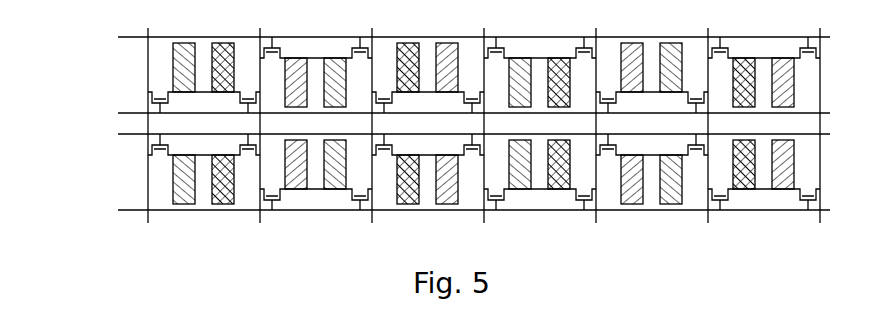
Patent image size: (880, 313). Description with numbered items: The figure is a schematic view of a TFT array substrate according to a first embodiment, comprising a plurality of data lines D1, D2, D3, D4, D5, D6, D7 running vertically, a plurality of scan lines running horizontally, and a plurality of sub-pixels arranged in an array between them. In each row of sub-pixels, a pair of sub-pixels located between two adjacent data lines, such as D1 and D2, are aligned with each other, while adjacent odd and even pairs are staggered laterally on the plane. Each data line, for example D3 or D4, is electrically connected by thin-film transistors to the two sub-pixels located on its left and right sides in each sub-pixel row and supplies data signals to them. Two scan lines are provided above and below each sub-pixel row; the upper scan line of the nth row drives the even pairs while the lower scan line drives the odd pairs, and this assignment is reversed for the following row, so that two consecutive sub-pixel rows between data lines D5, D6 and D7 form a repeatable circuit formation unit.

The data line D1 is at (149, 115).
The data line D2 is at (262, 115).
The data line D3 is at (375, 115).
The data line D4 is at (487, 115).
The data line D5 is at (593, 114).
The data line D6 is at (704, 114).
The data line D7 is at (807, 116).